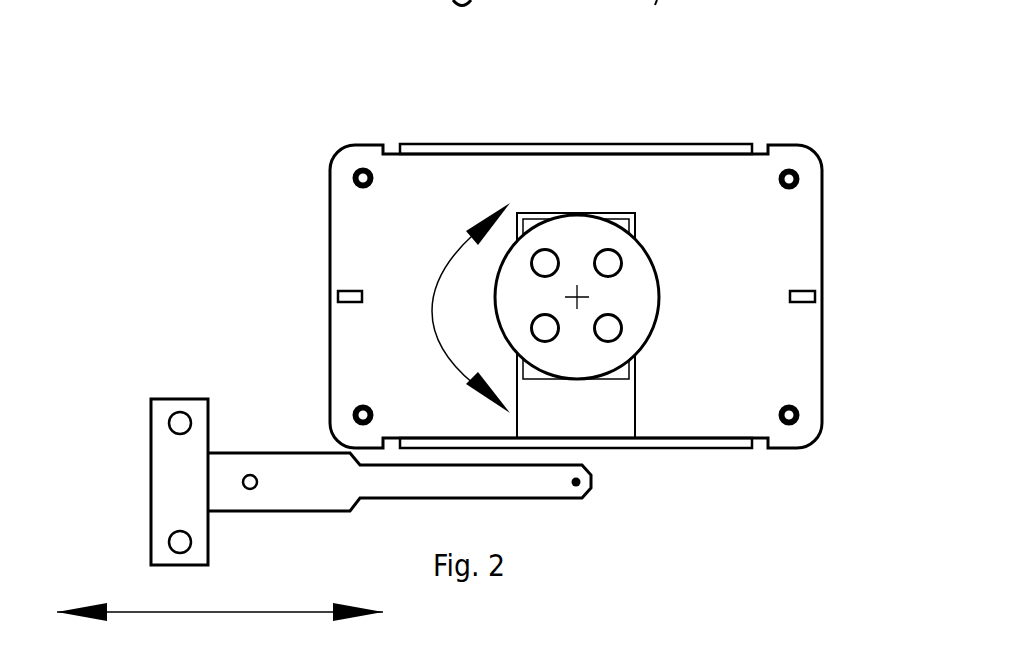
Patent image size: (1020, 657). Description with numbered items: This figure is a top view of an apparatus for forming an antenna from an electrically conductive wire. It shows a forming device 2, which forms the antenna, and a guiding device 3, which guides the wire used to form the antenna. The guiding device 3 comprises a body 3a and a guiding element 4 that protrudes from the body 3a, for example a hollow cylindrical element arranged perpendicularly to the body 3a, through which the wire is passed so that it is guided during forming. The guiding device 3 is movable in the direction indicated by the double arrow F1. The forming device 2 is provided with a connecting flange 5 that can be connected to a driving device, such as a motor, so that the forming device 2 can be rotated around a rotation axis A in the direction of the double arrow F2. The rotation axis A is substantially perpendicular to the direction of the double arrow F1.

The forming device 2 is at (710, 196).
The guiding device 3 is at (148, 340).
The body 3a is at (212, 485).
The guiding element 4 is at (583, 488).
The connecting flange 5 is at (640, 296).
The rotation axis A is at (583, 297).
The double arrow F1 is at (220, 598).
The double arrow F2 is at (456, 308).